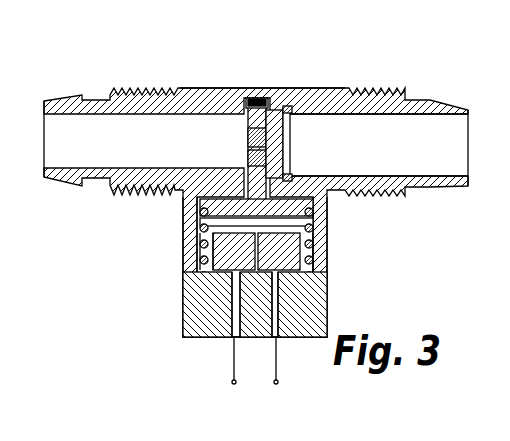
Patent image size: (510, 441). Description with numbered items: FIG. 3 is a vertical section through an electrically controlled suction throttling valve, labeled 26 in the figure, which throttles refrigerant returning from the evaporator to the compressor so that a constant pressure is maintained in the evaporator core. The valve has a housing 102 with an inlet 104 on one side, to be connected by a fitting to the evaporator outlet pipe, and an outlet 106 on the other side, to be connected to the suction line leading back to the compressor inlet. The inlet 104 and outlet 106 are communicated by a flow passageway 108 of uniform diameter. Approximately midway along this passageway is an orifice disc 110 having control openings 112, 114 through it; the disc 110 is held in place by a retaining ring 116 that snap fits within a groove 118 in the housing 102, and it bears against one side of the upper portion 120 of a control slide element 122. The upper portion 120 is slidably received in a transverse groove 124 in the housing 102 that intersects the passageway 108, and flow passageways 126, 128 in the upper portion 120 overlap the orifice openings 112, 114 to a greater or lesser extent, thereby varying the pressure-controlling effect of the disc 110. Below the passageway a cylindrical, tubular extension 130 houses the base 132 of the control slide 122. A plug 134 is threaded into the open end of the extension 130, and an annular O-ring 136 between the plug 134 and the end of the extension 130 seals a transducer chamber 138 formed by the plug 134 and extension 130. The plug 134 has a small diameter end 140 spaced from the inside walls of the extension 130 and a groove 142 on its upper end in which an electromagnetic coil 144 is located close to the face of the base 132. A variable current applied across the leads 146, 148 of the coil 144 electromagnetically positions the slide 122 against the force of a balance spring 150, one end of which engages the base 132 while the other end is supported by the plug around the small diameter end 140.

The flow direction arrow 26 is at (321, 88).
The housing 102 is at (333, 101).
The inlet 104 is at (97, 103).
The outlet 106 is at (440, 112).
The flow passageway 108 is at (173, 112).
The orifice disc 110 is at (292, 141).
The control opening 112 is at (290, 156).
The control opening 114 is at (274, 122).
The retaining ring 116 is at (291, 113).
The groove 118 is at (292, 177).
The upper portion 120 is at (247, 118).
The control slide element 122 is at (243, 183).
The transverse groove 124 is at (258, 101).
The flow passageway 126 is at (250, 131).
The flow passageway 128 is at (248, 158).
The cylindrical tubular extension 130 is at (320, 242).
The base 132 is at (203, 222).
The plug 134 is at (320, 302).
The annular O-ring 136 is at (188, 318).
The transducer chamber 138 is at (318, 224).
The small diameter end 140 is at (320, 254).
The groove 142 is at (205, 250).
The electromagnetic coil 144 is at (263, 266).
The lead 146 is at (233, 352).
The lead 148 is at (275, 360).
The balance spring 150 is at (200, 231).